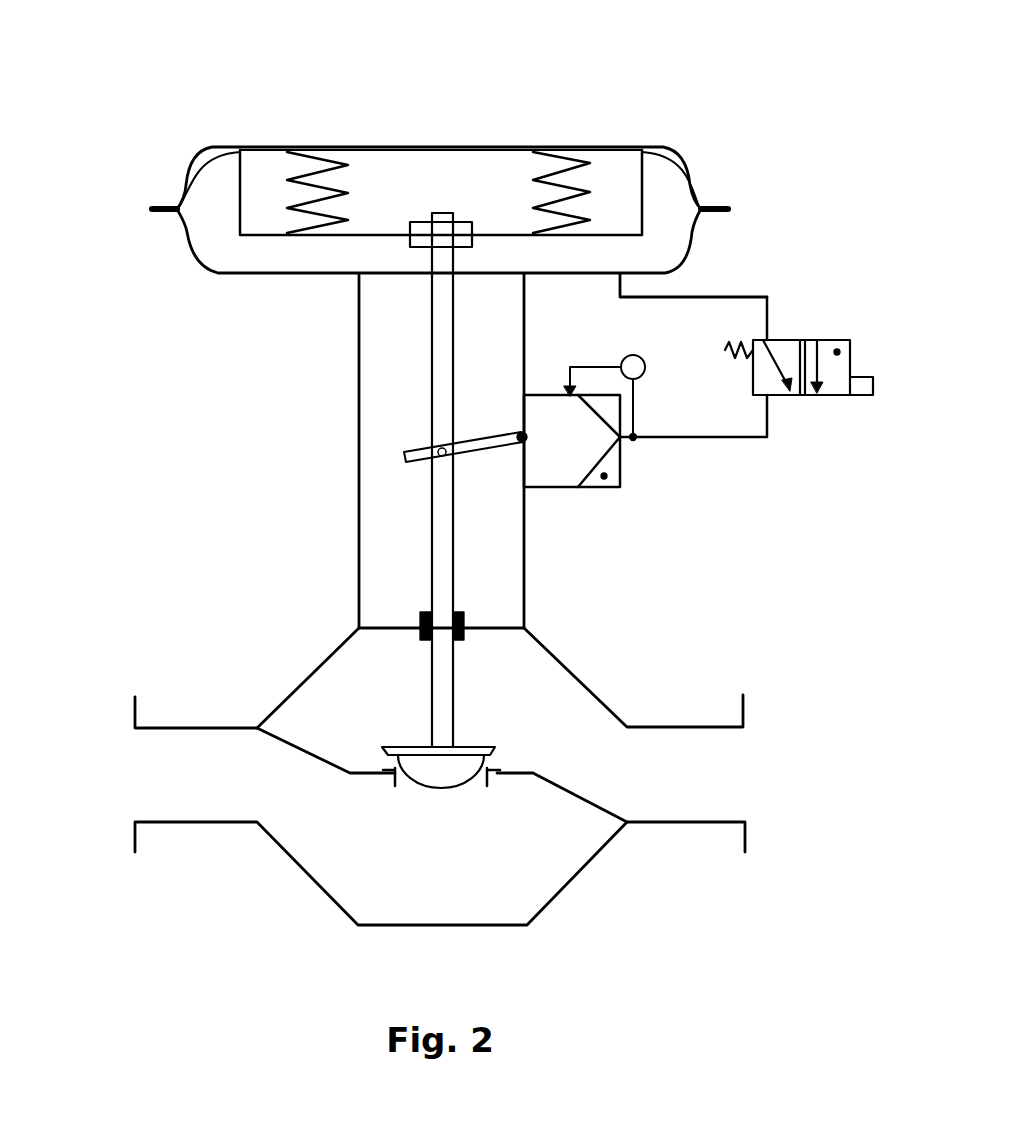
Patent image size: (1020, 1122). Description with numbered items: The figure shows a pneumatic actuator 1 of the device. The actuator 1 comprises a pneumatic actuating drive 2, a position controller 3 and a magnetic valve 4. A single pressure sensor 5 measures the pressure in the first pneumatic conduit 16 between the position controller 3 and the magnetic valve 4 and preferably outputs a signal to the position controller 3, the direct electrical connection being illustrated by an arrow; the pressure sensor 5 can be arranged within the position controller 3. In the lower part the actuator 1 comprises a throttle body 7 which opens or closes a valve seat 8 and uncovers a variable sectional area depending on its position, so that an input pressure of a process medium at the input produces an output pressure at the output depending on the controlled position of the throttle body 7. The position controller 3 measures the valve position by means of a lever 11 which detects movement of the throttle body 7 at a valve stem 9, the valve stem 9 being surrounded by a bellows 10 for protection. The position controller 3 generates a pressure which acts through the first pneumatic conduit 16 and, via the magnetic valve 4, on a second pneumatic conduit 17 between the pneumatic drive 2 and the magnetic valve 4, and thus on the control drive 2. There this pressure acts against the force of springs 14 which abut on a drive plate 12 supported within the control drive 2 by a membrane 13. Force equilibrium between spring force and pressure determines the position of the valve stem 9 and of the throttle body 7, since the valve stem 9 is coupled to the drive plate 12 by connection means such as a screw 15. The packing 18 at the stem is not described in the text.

The actuator 1 is at (170, 925).
The pneumatic actuating drive 2 is at (152, 150).
The position controller 3 is at (604, 476).
The magnetic valve 4 is at (837, 352).
The pressure sensor 5 is at (642, 375).
The throttle body 7 is at (442, 773).
The valve seat 8 is at (498, 775).
The valve stem 9 is at (445, 692).
The bellows 10 is at (355, 375).
The lever 11 is at (420, 450).
The drive plate 12 is at (262, 230).
The membrane 13 is at (648, 163).
The springs 14 is at (542, 163).
The screw 15 is at (420, 213).
The first pneumatic conduit 16 is at (750, 440).
The second pneumatic conduit 17 is at (755, 292).
The stem packing 18 is at (425, 615).